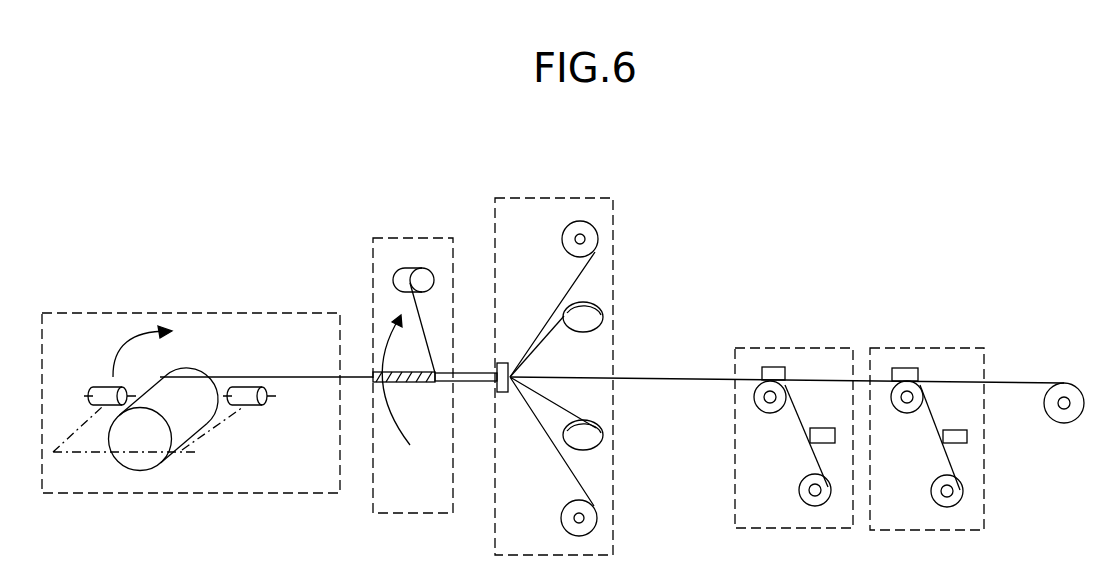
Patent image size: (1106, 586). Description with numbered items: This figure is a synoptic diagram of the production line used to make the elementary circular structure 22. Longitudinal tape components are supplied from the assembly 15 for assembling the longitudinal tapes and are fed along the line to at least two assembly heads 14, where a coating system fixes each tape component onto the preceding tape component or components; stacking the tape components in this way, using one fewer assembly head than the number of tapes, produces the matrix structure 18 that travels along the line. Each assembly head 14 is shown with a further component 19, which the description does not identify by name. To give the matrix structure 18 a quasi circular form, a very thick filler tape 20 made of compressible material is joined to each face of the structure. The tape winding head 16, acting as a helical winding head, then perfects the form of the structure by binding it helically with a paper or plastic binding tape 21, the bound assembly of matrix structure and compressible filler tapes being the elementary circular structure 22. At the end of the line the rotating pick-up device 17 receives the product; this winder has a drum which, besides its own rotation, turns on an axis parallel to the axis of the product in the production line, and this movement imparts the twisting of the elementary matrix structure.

The assembly head 14 is at (807, 353).
The assembly for assembling the longitudinal tapes 15 is at (528, 205).
The tape winding head 16 is at (400, 248).
The rotating pick-up device 17 is at (222, 318).
The matrix structure 18 is at (660, 373).
The guide element 19 is at (817, 428).
The filler tape 20 is at (542, 327).
The binding tape 21 is at (423, 333).
The elementary circular structure 22 is at (357, 372).